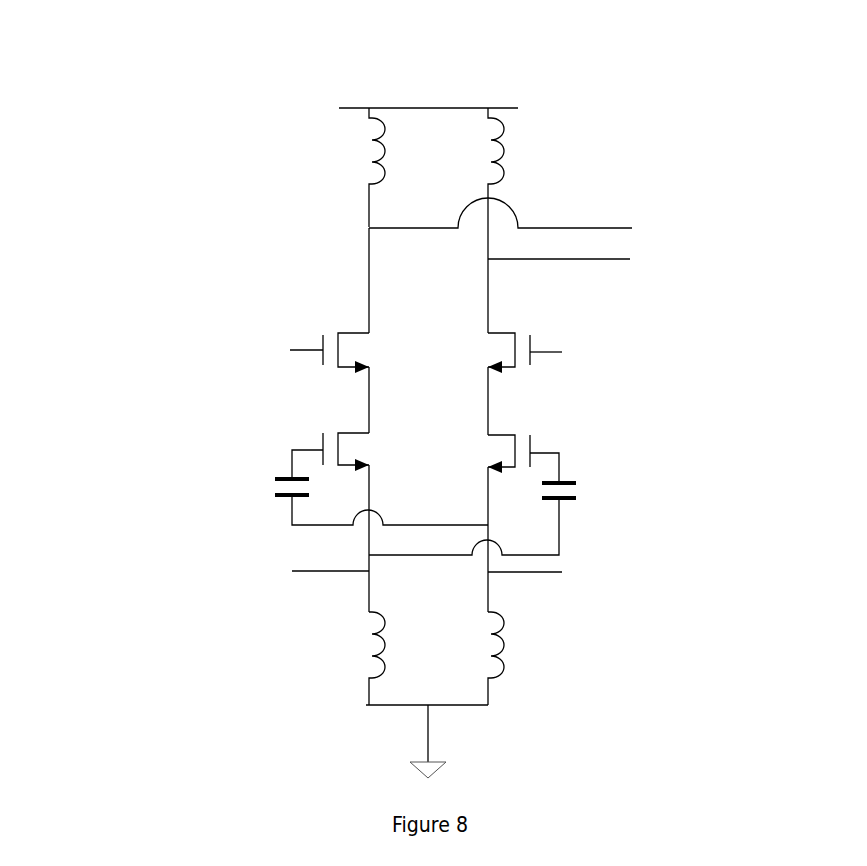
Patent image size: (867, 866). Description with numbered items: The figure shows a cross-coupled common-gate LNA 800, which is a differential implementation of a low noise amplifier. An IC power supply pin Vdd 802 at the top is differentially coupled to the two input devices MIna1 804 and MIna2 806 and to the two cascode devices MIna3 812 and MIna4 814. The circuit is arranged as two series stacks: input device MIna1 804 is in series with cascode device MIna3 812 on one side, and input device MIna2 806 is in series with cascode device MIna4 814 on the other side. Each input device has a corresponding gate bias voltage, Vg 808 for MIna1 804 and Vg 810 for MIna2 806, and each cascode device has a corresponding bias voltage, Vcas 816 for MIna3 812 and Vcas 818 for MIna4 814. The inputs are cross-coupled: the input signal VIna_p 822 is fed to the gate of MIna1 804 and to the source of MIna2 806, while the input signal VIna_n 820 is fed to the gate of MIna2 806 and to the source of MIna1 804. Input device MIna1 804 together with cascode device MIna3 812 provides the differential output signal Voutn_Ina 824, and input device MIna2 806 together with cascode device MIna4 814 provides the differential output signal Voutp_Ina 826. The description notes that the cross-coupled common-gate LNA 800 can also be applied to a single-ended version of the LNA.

The cross-coupled common-gate LNA 800 is at (126, 196).
The IC power supply pin Vdd 802 is at (428, 73).
The input device MIna1 804 is at (291, 418).
The input device MIna2 806 is at (560, 421).
The voltage Vg 808 is at (250, 448).
The voltage Vg 810 is at (605, 453).
The cascode device MIna3 812 is at (290, 311).
The cascode device MIna4 814 is at (565, 315).
The voltage Vcas 816 is at (235, 341).
The voltage Vcas 818 is at (618, 347).
The input signal VIna_n 820 is at (228, 568).
The input signal VIna_p 822 is at (633, 574).
The differential output signal Voutn_Ina 824 is at (735, 223).
The differential output signal Voutp_Ina 826 is at (735, 260).